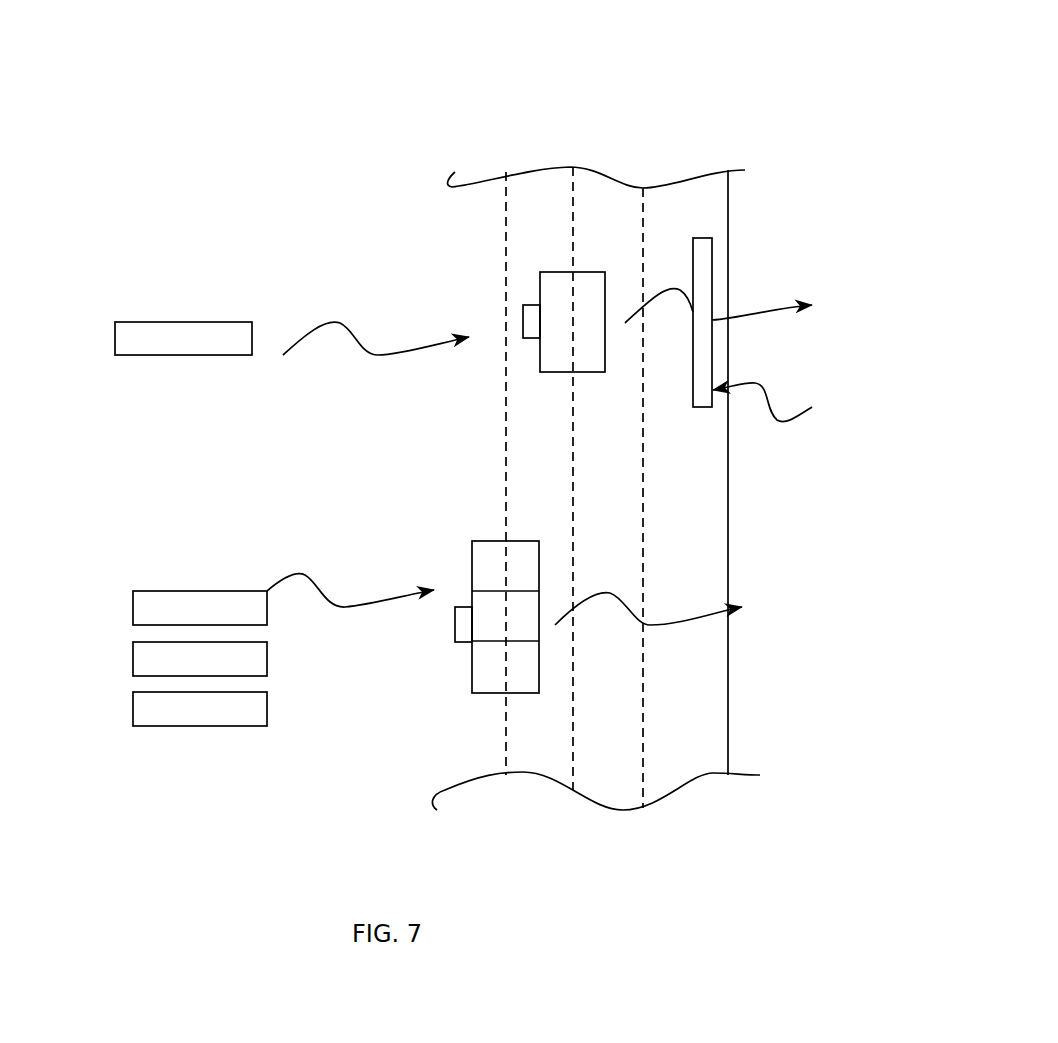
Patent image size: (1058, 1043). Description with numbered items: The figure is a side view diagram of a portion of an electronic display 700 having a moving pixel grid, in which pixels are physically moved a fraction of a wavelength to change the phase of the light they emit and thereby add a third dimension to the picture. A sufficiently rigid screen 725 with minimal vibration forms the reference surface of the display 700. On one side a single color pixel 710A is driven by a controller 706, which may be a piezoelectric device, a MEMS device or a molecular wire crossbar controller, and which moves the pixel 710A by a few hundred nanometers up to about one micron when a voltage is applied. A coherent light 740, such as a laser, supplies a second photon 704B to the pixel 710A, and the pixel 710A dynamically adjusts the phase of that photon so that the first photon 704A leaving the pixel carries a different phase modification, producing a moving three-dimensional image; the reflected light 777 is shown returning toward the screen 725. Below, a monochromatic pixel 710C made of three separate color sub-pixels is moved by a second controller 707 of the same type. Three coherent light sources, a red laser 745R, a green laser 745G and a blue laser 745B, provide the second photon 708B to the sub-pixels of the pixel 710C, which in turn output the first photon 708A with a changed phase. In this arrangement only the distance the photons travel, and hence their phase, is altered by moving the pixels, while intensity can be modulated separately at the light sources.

The electronic display 700 is at (527, 37).
The screen 725 is at (730, 217).
The single color pixel 710A is at (557, 288).
The controller 706 is at (523, 323).
The coherent light 740 is at (181, 318).
The second photon 704B is at (376, 356).
The first photon 704A is at (767, 322).
The reflected light 777 is at (804, 403).
The second photon 708B is at (350, 570).
The red laser 745R is at (151, 608).
The green laser 745G is at (151, 659).
The blue laser 745B is at (151, 709).
The monochromatic pixel 710C is at (480, 693).
The controller 707 is at (453, 628).
The first photon 708A is at (699, 610).